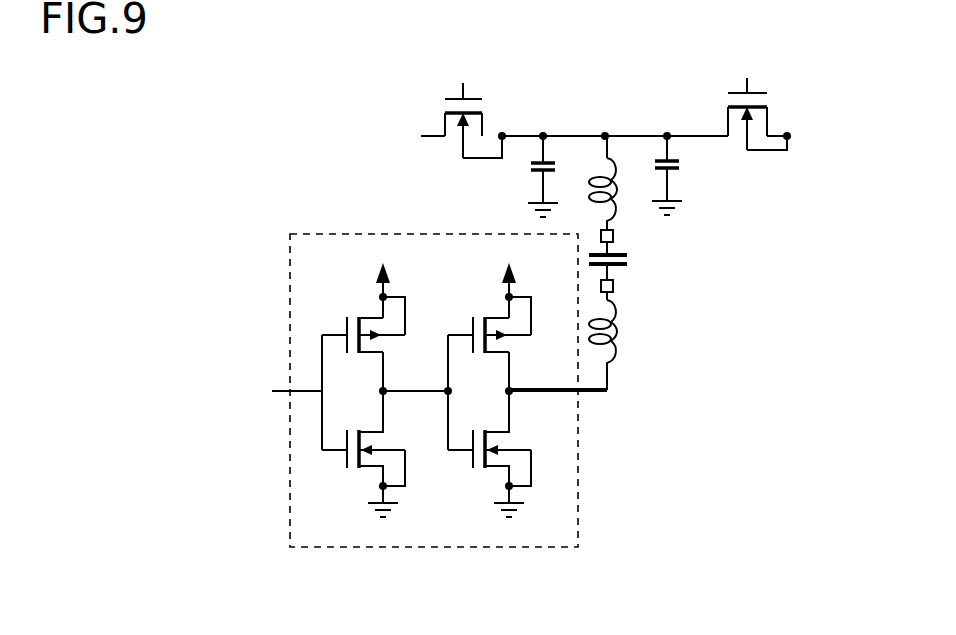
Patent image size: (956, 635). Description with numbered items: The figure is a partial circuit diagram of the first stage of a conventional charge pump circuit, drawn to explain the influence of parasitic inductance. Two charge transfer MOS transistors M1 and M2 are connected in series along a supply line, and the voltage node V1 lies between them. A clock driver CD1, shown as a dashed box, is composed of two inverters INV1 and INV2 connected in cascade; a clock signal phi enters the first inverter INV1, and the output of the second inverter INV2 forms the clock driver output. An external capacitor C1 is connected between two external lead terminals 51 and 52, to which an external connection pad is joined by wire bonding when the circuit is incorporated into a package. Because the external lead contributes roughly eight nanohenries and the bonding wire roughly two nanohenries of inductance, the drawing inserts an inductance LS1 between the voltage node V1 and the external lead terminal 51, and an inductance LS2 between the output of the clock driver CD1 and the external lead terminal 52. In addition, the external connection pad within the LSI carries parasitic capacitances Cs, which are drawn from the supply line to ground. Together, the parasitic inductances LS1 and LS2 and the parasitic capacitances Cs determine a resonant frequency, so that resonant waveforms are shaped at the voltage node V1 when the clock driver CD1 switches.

The voltage node V1 is at (606, 128).
The charge transfer MOS transistor M2 is at (475, 138).
The charge transfer MOS transistor M1 is at (760, 132).
The parasitic capacitance Cs is at (622, 174).
The inductance LS2 is at (622, 185).
The external lead terminal 51 is at (622, 233).
The external capacitor C1 is at (626, 261).
The external lead terminal 52 is at (620, 284).
The inductance LS1 is at (630, 334).
The clock driver CD1 is at (475, 532).
The inverter INV1 is at (345, 342).
The inverter INV2 is at (483, 342).
The clock input phi is at (280, 391).